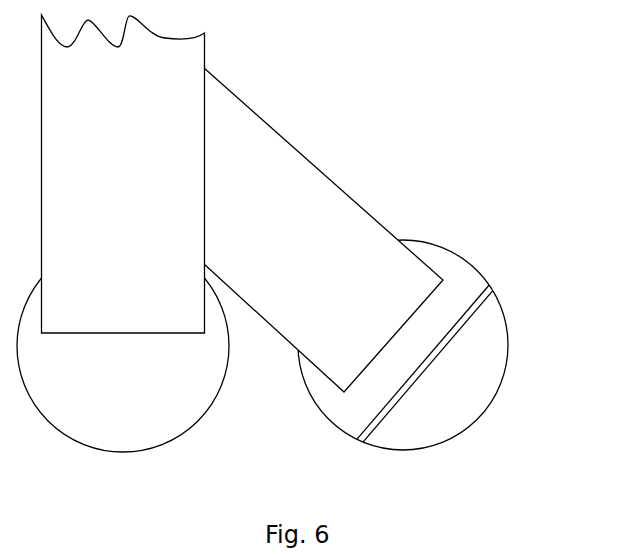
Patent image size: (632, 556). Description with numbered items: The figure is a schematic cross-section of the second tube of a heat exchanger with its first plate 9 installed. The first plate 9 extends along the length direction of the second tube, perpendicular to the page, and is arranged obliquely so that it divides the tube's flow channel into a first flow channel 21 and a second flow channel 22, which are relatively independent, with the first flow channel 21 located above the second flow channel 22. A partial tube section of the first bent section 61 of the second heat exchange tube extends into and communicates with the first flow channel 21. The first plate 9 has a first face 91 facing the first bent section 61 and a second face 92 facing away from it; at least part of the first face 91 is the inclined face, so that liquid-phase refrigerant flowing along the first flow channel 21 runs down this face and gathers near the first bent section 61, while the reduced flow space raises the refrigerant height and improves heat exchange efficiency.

The first bent section 61 is at (337, 183).
The first flow channel 21 is at (463, 283).
The second flow channel 22 is at (485, 368).
The first plate 9 is at (386, 392).
The first face 91 is at (378, 412).
The second face 92 is at (382, 420).